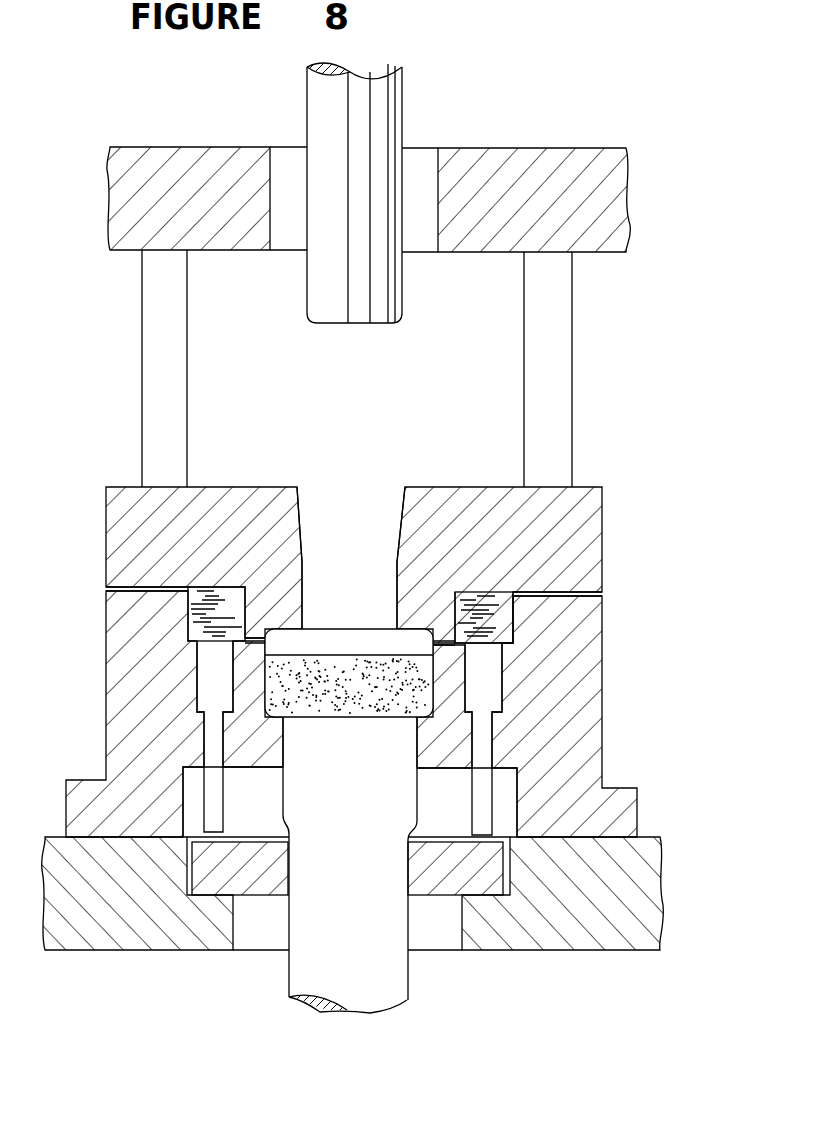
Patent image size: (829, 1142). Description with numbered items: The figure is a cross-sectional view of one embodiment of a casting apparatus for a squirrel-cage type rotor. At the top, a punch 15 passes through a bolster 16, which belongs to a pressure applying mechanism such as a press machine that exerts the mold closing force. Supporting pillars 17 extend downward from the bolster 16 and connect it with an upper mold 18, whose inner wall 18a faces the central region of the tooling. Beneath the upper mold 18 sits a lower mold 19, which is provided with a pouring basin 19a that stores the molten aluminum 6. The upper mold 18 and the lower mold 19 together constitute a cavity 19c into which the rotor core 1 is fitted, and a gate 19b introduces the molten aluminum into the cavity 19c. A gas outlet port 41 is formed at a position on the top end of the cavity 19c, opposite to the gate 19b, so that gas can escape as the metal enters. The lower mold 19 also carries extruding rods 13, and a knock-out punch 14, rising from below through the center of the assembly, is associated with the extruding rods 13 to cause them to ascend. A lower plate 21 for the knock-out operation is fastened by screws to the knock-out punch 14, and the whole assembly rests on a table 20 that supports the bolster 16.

The rotor core 1 is at (513, 622).
The molten aluminum 6 is at (311, 683).
The extruding rod 13 is at (483, 752).
The knock-out punch 14 is at (384, 985).
The punch 15 is at (380, 112).
The bolster 16 is at (597, 214).
The supporting pillars 17 is at (550, 383).
The upper mold 18 is at (562, 557).
The die cavity wall 18a is at (382, 515).
The lower mold 19 is at (557, 717).
The pouring basin 19a is at (352, 683).
The gate 19b is at (447, 647).
The cavity 19c is at (513, 602).
The table 20 is at (575, 922).
The lower plate 21 is at (428, 883).
The gas outlet port 41 is at (602, 593).